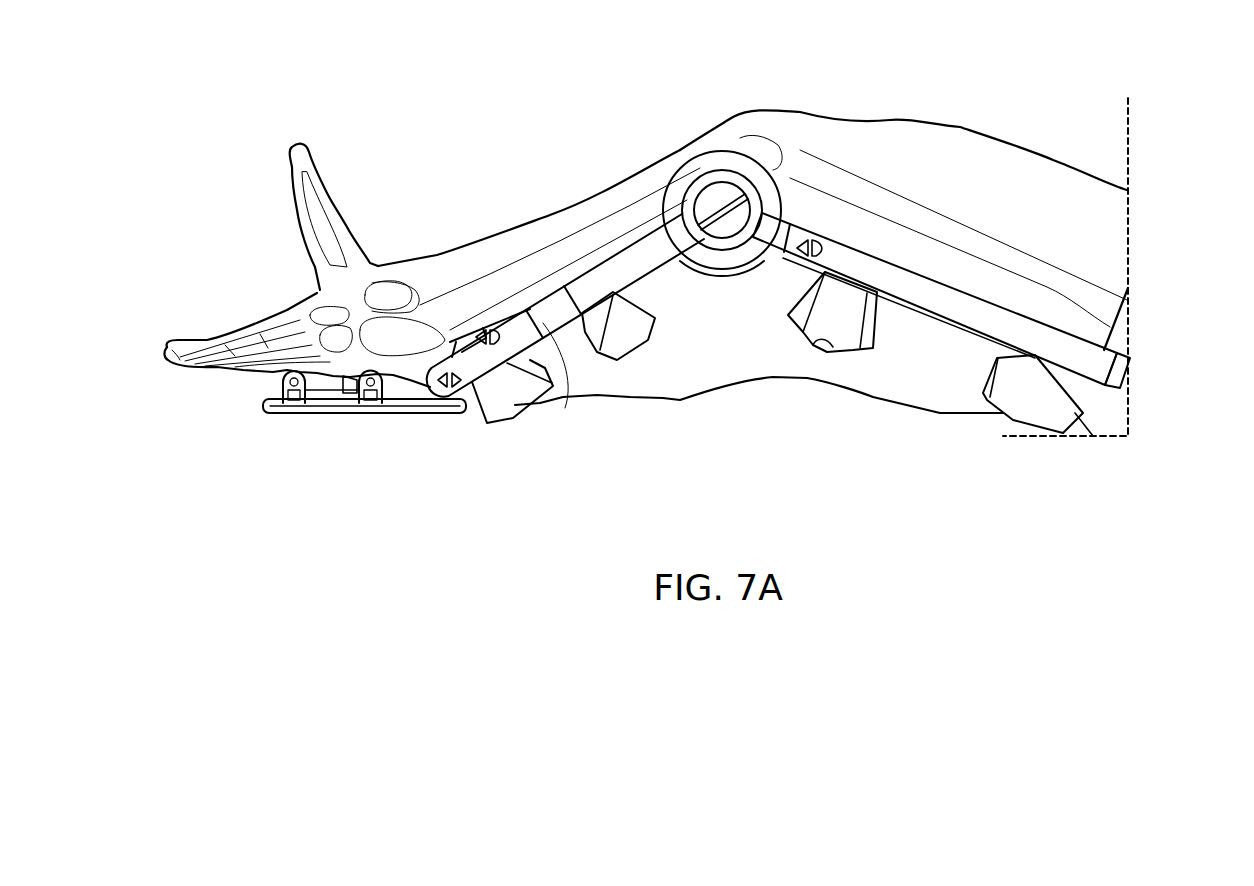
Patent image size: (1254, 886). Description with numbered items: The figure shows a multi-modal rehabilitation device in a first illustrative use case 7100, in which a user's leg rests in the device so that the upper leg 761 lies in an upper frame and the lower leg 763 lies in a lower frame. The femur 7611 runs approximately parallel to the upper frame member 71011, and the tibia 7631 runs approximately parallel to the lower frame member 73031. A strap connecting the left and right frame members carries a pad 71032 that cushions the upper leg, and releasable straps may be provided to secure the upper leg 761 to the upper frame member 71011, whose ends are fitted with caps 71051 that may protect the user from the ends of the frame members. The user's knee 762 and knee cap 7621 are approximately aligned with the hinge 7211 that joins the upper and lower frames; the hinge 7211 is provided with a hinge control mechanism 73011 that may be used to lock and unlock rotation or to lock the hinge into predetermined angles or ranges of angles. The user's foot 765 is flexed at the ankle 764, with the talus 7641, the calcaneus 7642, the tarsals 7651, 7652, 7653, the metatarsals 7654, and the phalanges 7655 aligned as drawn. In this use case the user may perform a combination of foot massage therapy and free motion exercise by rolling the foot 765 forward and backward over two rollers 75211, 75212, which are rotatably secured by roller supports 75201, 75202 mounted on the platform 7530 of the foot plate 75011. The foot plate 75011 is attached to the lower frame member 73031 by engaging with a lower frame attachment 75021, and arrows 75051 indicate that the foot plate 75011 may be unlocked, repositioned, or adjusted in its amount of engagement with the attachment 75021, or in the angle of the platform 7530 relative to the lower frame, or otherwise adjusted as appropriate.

The illustrative use case 7100 is at (1118, 468).
The upper frame member 71011 is at (947, 303).
The pad 71032 is at (873, 350).
The cap 71051 is at (1122, 372).
The hinge 7211 is at (700, 167).
The hinge control mechanism 73011 is at (647, 217).
The lower frame member 73031 is at (603, 220).
The platform 7530 is at (447, 413).
The foot plate 75011 is at (508, 345).
The lower frame attachment 75021 is at (588, 350).
The arrow 75051 is at (482, 418).
The roller support 75201 is at (275, 413).
The roller support 75202 is at (357, 420).
The roller 75211 is at (297, 410).
The roller 75212 is at (380, 410).
The upper leg 761 is at (987, 133).
The femur 7611 is at (987, 230).
The knee 762 is at (768, 110).
The knee cap 7621 is at (737, 130).
The lower leg 763 is at (507, 223).
The tibia 7631 is at (580, 225).
The ankle 764 is at (385, 266).
The talus 7641 is at (394, 268).
The calcaneus 7642 is at (448, 340).
The foot 765 is at (207, 340).
The tarsal 7651 is at (333, 303).
The tarsal 7652 is at (270, 365).
The tarsal 7653 is at (268, 335).
The metatarsals 7654 is at (232, 352).
The phalanges 7655 is at (197, 357).